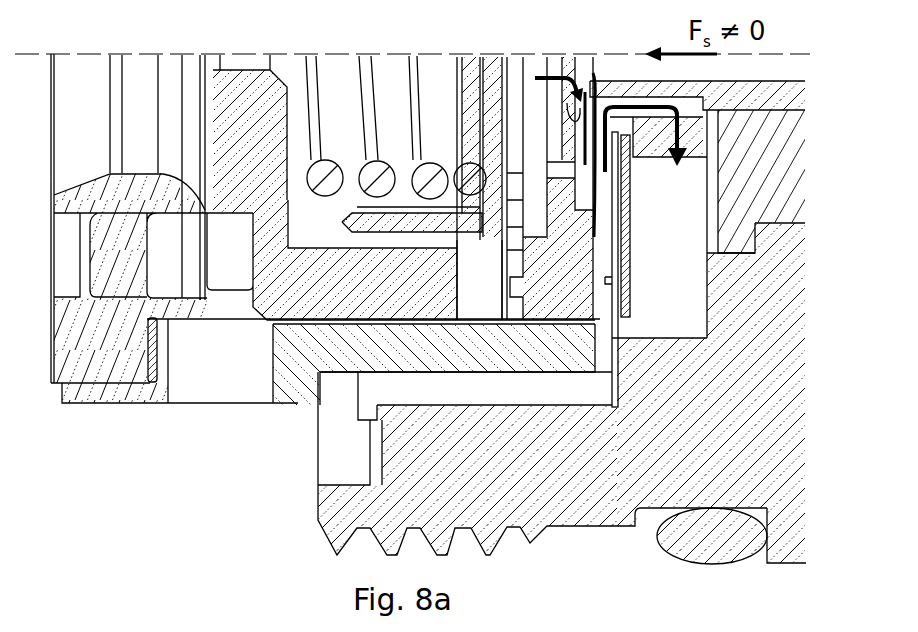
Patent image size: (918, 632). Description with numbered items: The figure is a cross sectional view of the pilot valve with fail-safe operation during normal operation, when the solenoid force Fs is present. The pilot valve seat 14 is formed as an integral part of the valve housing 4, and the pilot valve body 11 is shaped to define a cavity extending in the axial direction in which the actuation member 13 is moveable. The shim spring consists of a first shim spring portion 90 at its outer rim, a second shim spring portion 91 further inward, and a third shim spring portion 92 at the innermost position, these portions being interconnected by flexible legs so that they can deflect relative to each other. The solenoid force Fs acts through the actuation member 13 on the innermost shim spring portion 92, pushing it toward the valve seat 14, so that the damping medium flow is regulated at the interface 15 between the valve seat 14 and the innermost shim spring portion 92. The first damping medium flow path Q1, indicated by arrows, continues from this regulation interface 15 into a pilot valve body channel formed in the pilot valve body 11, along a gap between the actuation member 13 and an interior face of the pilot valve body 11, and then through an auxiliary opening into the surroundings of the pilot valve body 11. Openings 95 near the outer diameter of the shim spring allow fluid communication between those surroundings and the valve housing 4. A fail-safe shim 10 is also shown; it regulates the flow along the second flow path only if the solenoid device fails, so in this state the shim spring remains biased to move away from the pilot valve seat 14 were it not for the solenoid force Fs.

The valve housing 4 is at (297, 407).
The fail-safe shim 10 is at (630, 243).
The pilot valve body 11 is at (797, 223).
The actuation member 13 is at (788, 108).
The pilot valve seat 14 is at (557, 109).
The regulation interface 15 is at (595, 125).
The first shim spring portion 90 is at (625, 353).
The second shim spring portion 91 is at (595, 237).
The third shim spring portion 92 is at (593, 74).
The openings 95 is at (616, 388).
The first damping medium flow path Q1 is at (611, 96).